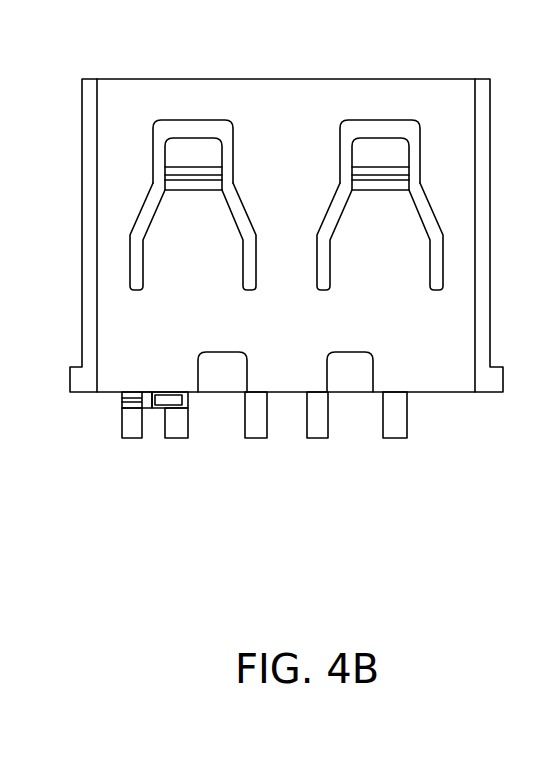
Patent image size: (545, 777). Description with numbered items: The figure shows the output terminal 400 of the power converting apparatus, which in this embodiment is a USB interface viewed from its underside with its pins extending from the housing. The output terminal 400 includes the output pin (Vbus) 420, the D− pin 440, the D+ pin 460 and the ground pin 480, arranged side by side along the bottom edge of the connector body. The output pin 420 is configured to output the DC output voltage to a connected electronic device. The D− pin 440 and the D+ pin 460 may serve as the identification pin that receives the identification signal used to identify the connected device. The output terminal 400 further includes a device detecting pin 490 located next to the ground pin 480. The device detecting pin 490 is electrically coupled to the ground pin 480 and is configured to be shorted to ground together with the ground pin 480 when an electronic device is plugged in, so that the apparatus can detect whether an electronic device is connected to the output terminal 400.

The output terminal 400 is at (80, 55).
The output pin (Vbus) 420 is at (397, 437).
The D− pin 440 is at (322, 437).
The D+ pin 460 is at (262, 437).
The ground pin 480 is at (175, 437).
The device detecting pin 490 is at (138, 437).